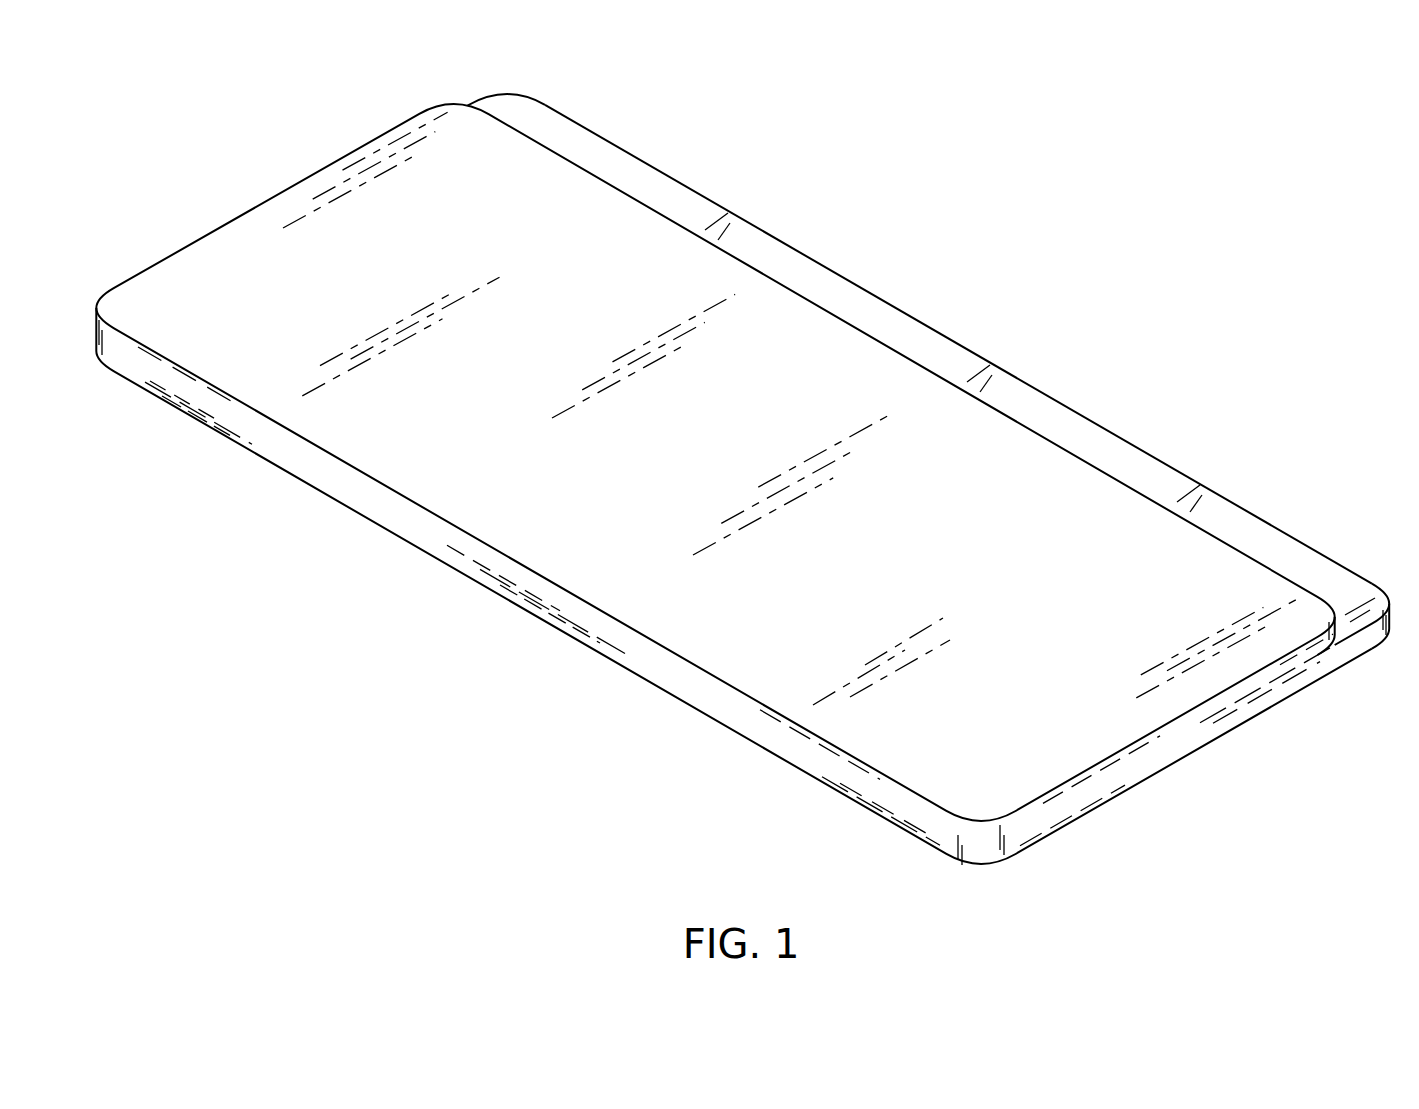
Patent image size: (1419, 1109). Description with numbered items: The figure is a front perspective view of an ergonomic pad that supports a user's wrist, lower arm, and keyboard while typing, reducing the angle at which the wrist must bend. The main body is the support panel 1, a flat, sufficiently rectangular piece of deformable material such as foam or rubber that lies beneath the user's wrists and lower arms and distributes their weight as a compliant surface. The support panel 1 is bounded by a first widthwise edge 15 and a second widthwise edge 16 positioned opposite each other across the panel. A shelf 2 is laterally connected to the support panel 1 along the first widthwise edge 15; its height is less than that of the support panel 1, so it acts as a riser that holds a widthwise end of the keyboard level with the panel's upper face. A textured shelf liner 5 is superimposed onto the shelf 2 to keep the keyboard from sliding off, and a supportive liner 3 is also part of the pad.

The support panel 1 is at (1185, 750).
The shelf 2 is at (1368, 638).
The supportive liner 3 is at (225, 248).
The shelf liner 5 is at (1112, 458).
The first widthwise edge 15 is at (835, 315).
The second widthwise edge 16 is at (368, 475).